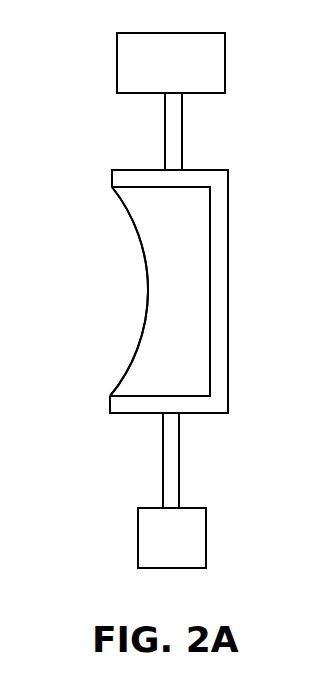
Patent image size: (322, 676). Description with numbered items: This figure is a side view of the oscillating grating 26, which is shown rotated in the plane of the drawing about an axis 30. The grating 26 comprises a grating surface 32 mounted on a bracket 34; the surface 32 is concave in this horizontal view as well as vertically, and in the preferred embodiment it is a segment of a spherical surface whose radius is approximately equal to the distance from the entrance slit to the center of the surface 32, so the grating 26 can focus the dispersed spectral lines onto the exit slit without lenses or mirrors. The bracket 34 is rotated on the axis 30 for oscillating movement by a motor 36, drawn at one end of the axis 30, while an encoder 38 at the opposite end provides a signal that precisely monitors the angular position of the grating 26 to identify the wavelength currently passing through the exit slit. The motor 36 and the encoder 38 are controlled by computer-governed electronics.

The oscillating grating 26 is at (112, 282).
The axis 30 is at (165, 117).
The grating surface 32 is at (146, 312).
The bracket 34 is at (228, 290).
The motor 36 is at (206, 538).
The encoder 38 is at (226, 58).